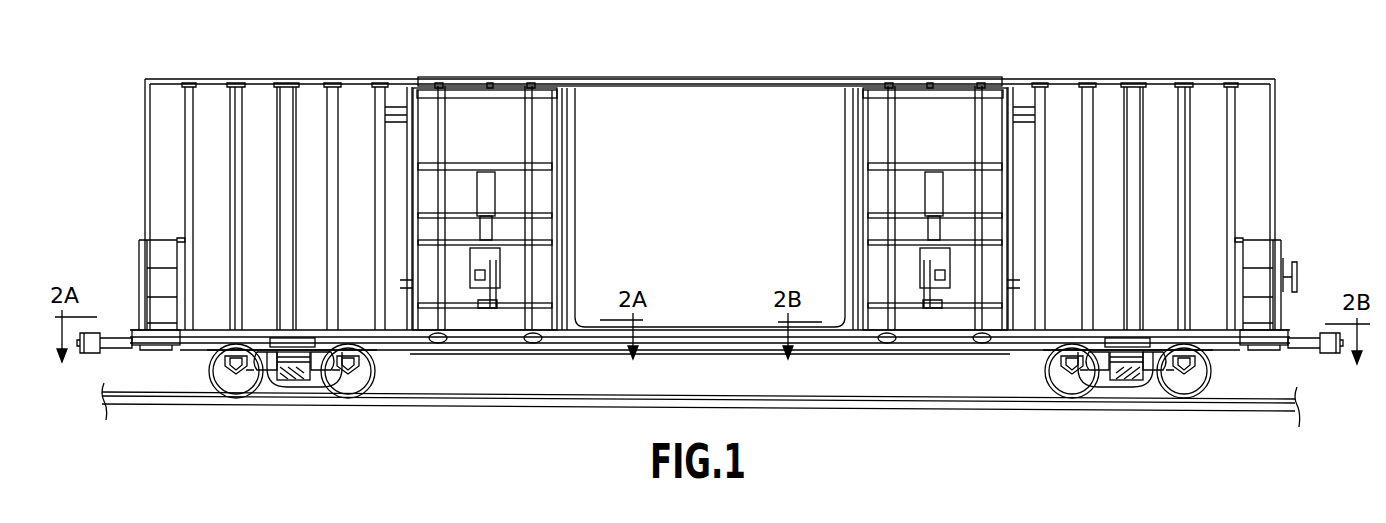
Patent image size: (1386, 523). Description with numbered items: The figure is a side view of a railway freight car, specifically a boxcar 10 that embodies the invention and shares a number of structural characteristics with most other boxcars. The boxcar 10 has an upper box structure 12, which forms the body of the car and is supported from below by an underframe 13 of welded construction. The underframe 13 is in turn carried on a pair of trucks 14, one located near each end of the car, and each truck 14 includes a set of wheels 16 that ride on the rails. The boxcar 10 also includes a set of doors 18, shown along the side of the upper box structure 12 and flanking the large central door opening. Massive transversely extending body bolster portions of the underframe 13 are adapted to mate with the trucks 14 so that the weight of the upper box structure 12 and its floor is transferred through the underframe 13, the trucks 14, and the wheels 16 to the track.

The boxcar 10 is at (710, 233).
The upper box structure 12 is at (1275, 135).
The underframe 13 is at (1213, 345).
The trucks 14 is at (292, 386).
The wheels 16 is at (235, 385).
The doors 18 is at (511, 108).